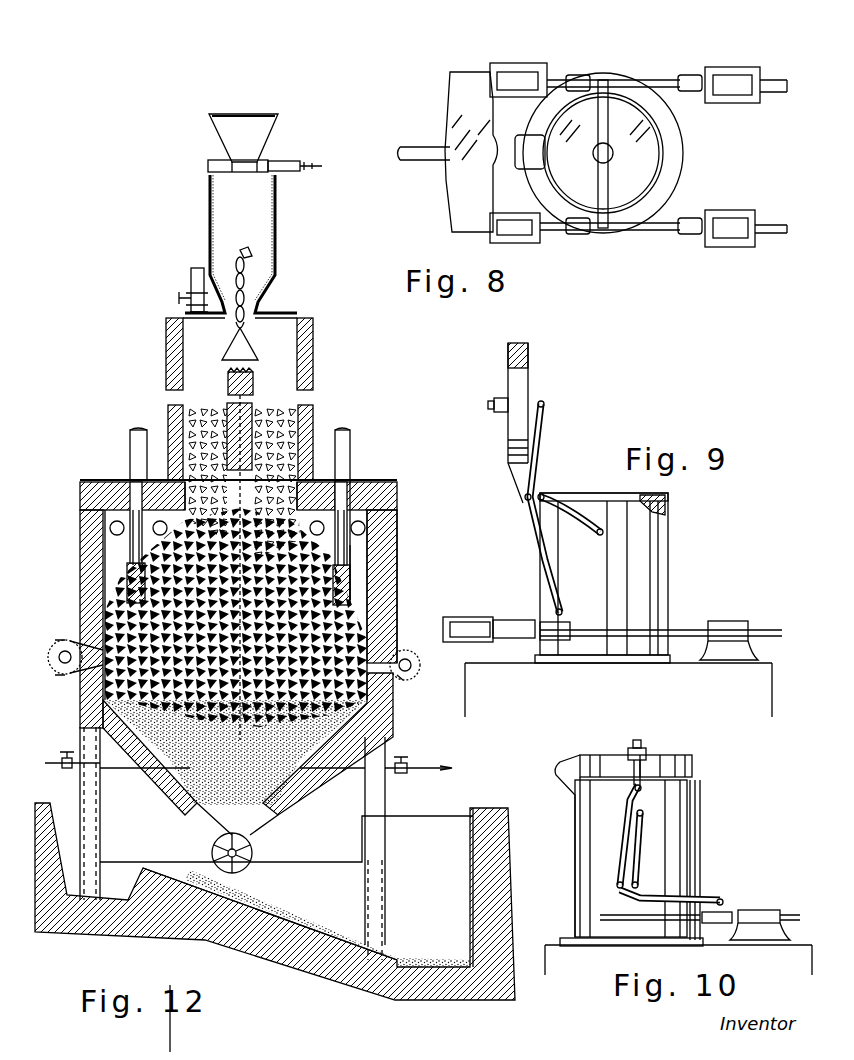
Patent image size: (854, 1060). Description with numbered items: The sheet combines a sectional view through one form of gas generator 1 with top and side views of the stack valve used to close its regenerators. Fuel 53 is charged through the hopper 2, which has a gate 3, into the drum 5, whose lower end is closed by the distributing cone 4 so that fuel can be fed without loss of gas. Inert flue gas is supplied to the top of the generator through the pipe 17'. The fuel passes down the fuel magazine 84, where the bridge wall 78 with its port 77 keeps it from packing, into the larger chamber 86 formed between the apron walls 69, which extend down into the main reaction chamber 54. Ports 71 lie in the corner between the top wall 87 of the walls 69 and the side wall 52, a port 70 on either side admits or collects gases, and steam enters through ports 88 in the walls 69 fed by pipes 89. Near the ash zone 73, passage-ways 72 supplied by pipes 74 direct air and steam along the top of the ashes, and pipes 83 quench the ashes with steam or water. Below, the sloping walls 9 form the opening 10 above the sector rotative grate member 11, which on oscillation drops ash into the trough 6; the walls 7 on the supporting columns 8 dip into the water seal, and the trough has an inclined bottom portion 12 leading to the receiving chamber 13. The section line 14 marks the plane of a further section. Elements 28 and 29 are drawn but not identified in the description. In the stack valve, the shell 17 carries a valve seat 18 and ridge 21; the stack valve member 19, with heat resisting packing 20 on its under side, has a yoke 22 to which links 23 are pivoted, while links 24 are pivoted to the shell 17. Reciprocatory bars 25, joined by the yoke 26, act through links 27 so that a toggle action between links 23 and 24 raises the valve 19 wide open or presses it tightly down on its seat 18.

In FIG. 12, the generator 1 is at (340, 575).
In FIG. 12, the hopper 2 is at (265, 126).
In FIG. 12, the gate 3 is at (292, 165).
In FIG. 12, the distributing cone 4 is at (240, 352).
In FIG. 12, the drum 5 is at (278, 232).
In FIG. 12, the ash receiver or trough 6 is at (495, 860).
In FIG. 12, the wall 7 is at (372, 803).
In FIG. 12, the supporting column 8 is at (378, 832).
In FIG. 12, the sloping wall 9 is at (165, 800).
In FIG. 12, the passage-way or opening 10 is at (265, 810).
In FIG. 12, the sector rotative grate member 11 is at (245, 850).
In FIG. 12, the inclined bottom portion 12 is at (337, 940).
In FIG. 12, the receiving chamber 13 is at (505, 930).
In FIG. 12, the section line 14— 14 is at (300, 380).
In FIG. 8, the shell 17 is at (634, 153).
In FIG. 9, the shell 17 is at (633, 574).
In FIG. 10, the shell 17 is at (669, 858).
In FIG. 12, the pipe 17' is at (171, 284).
In FIG. 9, the valve seat 18 is at (658, 500).
In FIG. 10, the valve seat 18 is at (690, 780).
In FIG. 8, the stack valve member 19 is at (625, 122).
In FIG. 9, the stack valve member 19 is at (520, 392).
In FIG. 10, the stack valve member 19 is at (605, 755).
In FIG. 9, the heat resisting packing 20 is at (527, 352).
In FIG. 9, the ridge 21 is at (648, 495).
In FIG. 8, the yoke 22 is at (610, 197).
In FIG. 9, the yoke 22 is at (512, 404).
In FIG. 10, the yoke 22 is at (640, 770).
In FIG. 9, the link 23 is at (530, 452).
In FIG. 10, the link 23 is at (625, 835).
In FIG. 9, the link 24 is at (565, 510).
In FIG. 10, the link 24 is at (645, 840).
In FIG. 8, the reciprocatory bar 25 is at (762, 82).
In FIG. 9, the reciprocatory bar 25 is at (760, 638).
In FIG. 10, the reciprocatory bar 25 is at (790, 912).
In FIG. 8, the yoke 26 is at (465, 190).
In FIG. 9, the yoke 26 is at (470, 618).
In FIG. 9, the link 27 is at (540, 560).
In FIG. 10, the link 27 is at (680, 898).
In FIG. 12, the pipe 28 is at (195, 755).
In FIG. 12, the conduit 29 is at (215, 783).
In FIG. 12, the side wall 52 is at (380, 598).
In FIG. 12, the fuel 53 is at (165, 487).
In FIG. 12, the main reaction chamber 54 is at (397, 625).
In FIG. 12, the apron wall 69 is at (133, 575).
In FIG. 12, the port 70 is at (90, 520).
In FIG. 12, the port 71 is at (120, 494).
In FIG. 12, the passage-way 72 is at (70, 648).
In FIG. 12, the ash zone 73 is at (335, 720).
In FIG. 12, the pipe 74 is at (55, 665).
In FIG. 12, the port 77 is at (336, 452).
In FIG. 12, the bridge wall 78 is at (202, 419).
In FIG. 12, the pipe 83 is at (48, 770).
In FIG. 12, the fuel magazine 84 is at (290, 437).
In FIG. 12, the larger chamber 86 is at (378, 556).
In FIG. 12, the top wall 87 is at (366, 488).
In FIG. 12, the port 88 is at (130, 545).
In FIG. 12, the pipe 89 is at (135, 441).